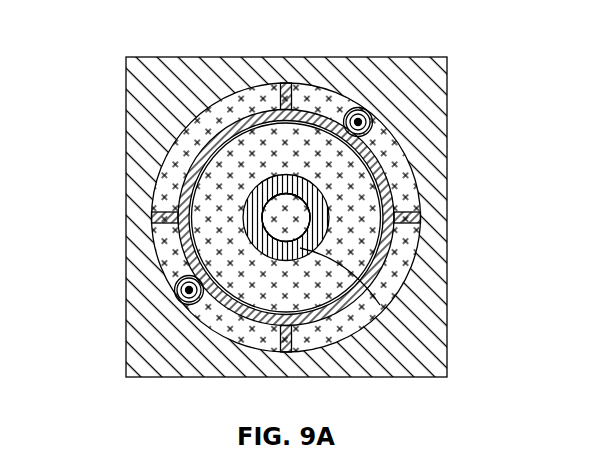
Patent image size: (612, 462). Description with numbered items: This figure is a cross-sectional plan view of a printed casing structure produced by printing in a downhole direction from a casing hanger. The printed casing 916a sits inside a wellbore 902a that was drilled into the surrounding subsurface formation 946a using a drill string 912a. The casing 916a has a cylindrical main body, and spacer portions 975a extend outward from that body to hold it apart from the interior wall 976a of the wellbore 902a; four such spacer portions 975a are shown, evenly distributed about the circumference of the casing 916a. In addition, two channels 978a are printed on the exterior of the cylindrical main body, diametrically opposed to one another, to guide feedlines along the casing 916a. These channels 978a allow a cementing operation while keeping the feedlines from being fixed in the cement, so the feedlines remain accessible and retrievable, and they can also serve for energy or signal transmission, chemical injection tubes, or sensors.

The housing block 946a is at (126, 75).
The wellbore 902a is at (288, 150).
The channels 978a is at (365, 112).
The interior wall 976a is at (372, 130).
The spacer portions 975a is at (419, 221).
The drill string 912a is at (386, 302).
The printed casing 916a is at (234, 318).